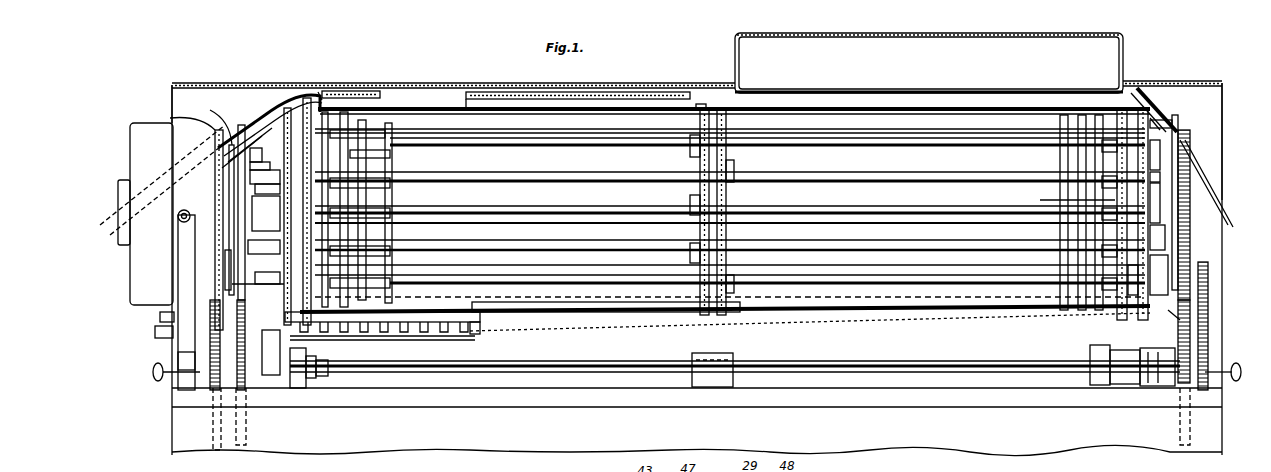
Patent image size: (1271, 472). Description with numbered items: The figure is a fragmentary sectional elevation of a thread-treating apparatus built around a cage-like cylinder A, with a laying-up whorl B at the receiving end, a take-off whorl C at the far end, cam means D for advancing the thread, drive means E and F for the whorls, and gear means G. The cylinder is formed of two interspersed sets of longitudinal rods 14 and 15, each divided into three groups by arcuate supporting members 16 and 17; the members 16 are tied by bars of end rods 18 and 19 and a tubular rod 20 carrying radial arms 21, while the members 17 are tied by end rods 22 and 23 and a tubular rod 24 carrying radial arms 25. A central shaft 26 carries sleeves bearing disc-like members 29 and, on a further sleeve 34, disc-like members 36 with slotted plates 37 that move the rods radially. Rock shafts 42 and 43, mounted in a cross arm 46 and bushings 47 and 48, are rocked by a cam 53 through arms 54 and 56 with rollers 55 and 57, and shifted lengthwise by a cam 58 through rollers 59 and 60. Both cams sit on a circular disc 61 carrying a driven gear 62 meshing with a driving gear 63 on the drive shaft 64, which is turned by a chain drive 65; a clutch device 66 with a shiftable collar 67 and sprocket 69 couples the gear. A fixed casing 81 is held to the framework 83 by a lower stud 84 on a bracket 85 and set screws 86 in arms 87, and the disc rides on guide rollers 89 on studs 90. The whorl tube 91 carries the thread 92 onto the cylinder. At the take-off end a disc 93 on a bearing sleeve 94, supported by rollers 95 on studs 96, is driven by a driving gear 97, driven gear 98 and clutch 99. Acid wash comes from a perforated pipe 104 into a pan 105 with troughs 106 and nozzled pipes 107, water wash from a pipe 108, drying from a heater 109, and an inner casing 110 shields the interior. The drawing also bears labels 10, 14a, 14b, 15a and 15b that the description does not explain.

The frame member 10 is at (718, 112).
The rods 14 is at (428, 107).
The rail curved portion 14a is at (296, 104).
The rail end portion 14b is at (318, 92).
The rods 15 is at (284, 104).
The guide strip portion 15a is at (265, 120).
The guide strip end 15b is at (278, 110).
The arcuate supporting members 16 is at (284, 128).
The arcuate supporting members 17 is at (262, 122).
The end rod 18 is at (360, 156).
The end rod 19 is at (1100, 112).
The tubular rod 20 is at (552, 148).
The radial arms 21 is at (392, 165).
The end rod 22 is at (498, 212).
The end rod 23 is at (740, 209).
The tubular rod 24 is at (484, 175).
The radial arms 25 is at (1160, 200).
The longitudinally extending shaft 26 is at (1160, 171).
The disc-like members 29 is at (350, 132).
The sleeve 34 is at (554, 205).
The disc-like members 36 is at (392, 272).
The peripherally slotted plate 37 is at (370, 157).
The rock shaft 42 is at (648, 210).
The rock shaft 43 is at (410, 204).
The cross arm 46 is at (286, 186).
The bushings 47 is at (350, 195).
The bushings 48 is at (1055, 198).
The rotating cam 53 is at (265, 174).
The arm 54 is at (266, 219).
The cam roller 55 is at (280, 278).
The arm 56 is at (265, 161).
The cam roller 57 is at (263, 152).
The rotating cam 58 is at (213, 119).
The cam roller 59 is at (267, 276).
The cam roller 60 is at (212, 180).
The circular disc 61 is at (215, 130).
The driven gear 62 is at (182, 117).
The driving gear 63 is at (213, 448).
The drive shaft 64 is at (520, 360).
The chain drive 65 is at (248, 445).
The clutch device 66 is at (271, 352).
The shiftable collar 67 is at (298, 380).
The sprocket 69 is at (243, 338).
The fixed casing 81 is at (145, 115).
The fixed framework 83 is at (175, 396).
The lower stud 84 is at (160, 319).
The bracket 85 is at (155, 332).
The set screws 86 is at (178, 219).
The arms 87 is at (178, 254).
The guide rollers 89 is at (225, 275).
The studs 90 is at (240, 290).
The tube 91 is at (118, 210).
The thread 92 is at (325, 92).
The circular disc 93 is at (1190, 128).
The bearing sleeve 94 is at (1162, 198).
The guide rollers 95 is at (1208, 275).
The studs 96 is at (1148, 278).
The driving gear 97 is at (1178, 334).
The driven gear 98 is at (1190, 139).
The clutch device 99 is at (1132, 356).
The perforated pipe 104 is at (378, 92).
The pan 105 is at (398, 340).
The troughs 106 is at (445, 336).
The nozzled pipes 107 is at (330, 338).
The perforated pipe 108 is at (660, 92).
The heater 109 is at (929, 63).
The inner cylindrical casing 110 is at (498, 130).
The cage-like cylinder A is at (462, 105).
The whorl B is at (322, 92).
The whorl C is at (1147, 108).
The cam means D is at (242, 212).
The drive means E is at (220, 345).
The drive means F is at (1171, 317).
The gear means G is at (151, 214).